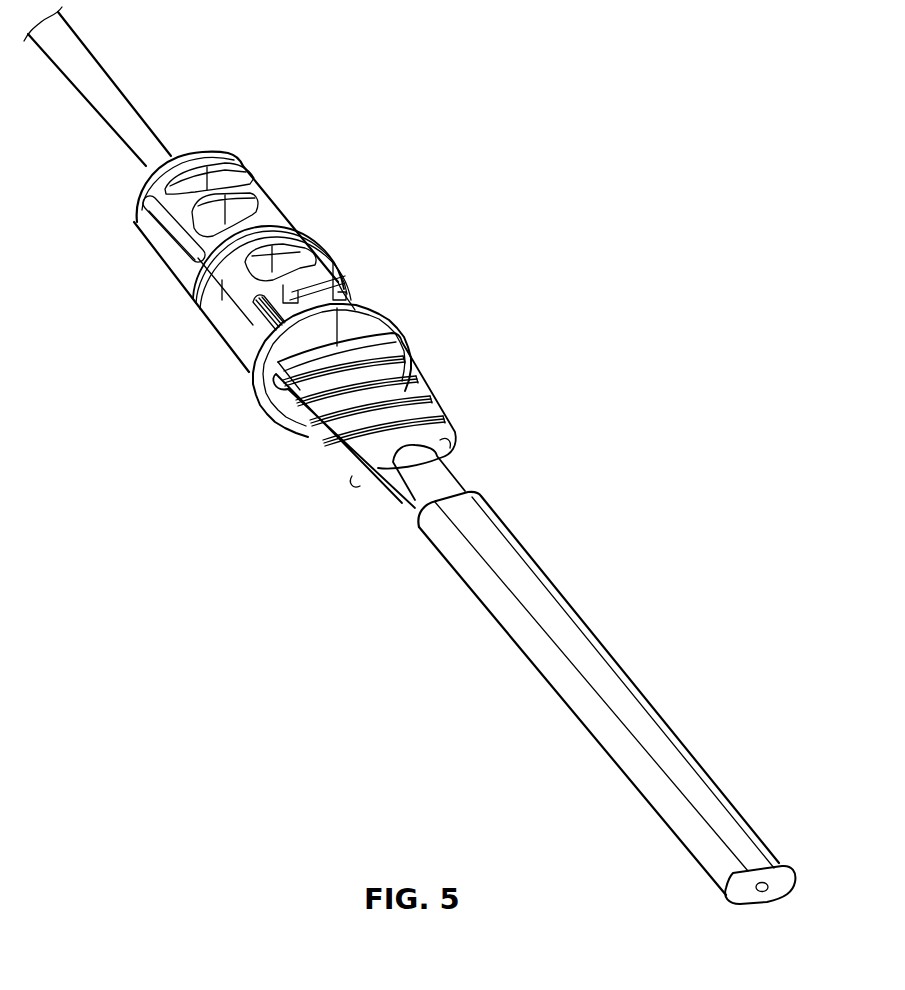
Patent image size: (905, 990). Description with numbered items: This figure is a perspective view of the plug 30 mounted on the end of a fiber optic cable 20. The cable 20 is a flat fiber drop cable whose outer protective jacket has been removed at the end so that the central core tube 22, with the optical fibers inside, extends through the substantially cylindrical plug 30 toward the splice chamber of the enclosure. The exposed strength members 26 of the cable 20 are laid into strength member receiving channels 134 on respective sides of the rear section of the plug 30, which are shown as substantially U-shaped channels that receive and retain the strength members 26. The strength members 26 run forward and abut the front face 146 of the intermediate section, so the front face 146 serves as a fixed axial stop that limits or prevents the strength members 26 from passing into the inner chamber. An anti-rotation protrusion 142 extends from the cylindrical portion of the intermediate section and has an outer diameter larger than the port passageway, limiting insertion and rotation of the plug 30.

The fiber optic cable 20 is at (642, 712).
The central core tube 22 is at (111, 80).
The strength members 26 is at (460, 488).
The plug 30 is at (378, 297).
The strength member receiving channels 134 is at (450, 452).
The protrusion 142 is at (338, 292).
The front face 146 is at (388, 326).